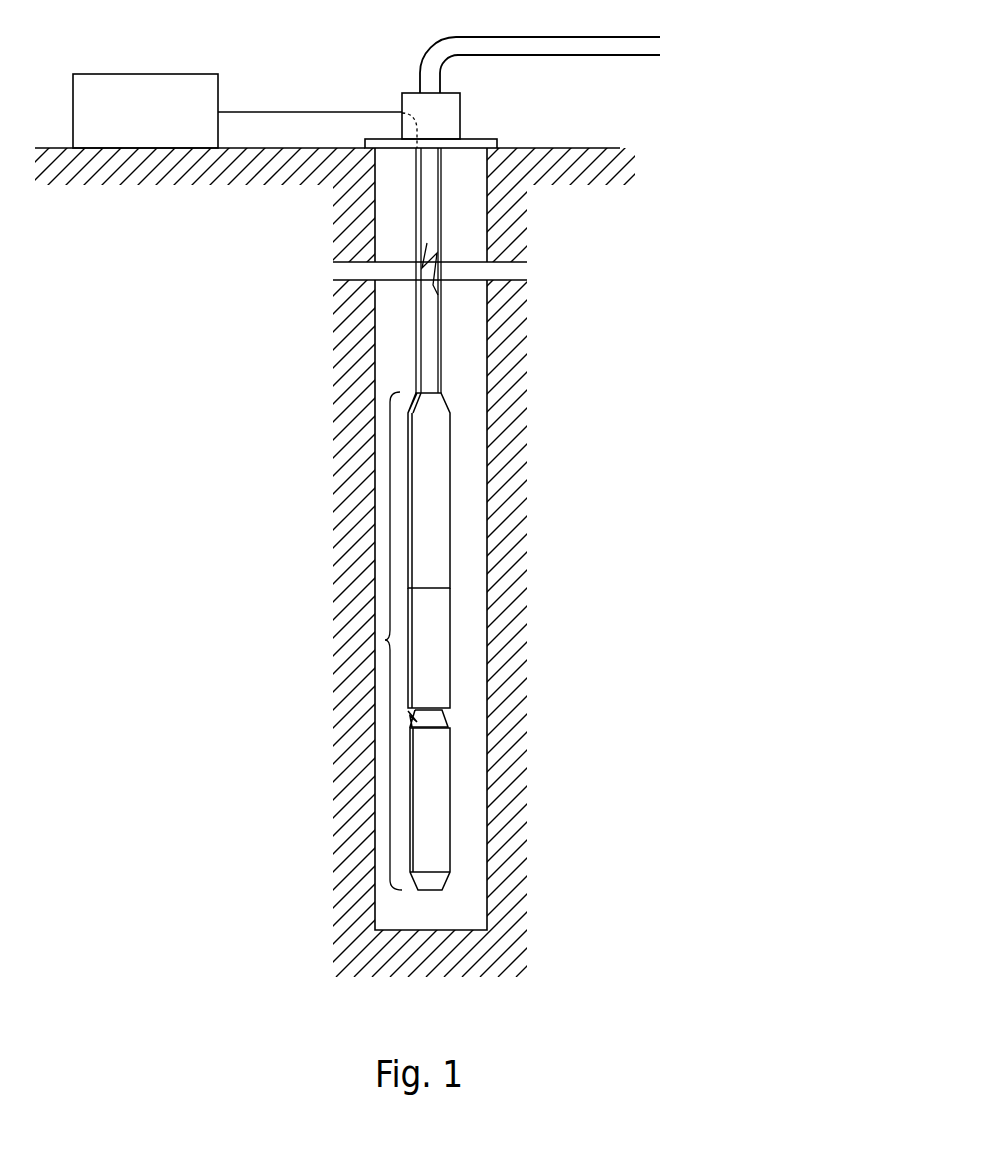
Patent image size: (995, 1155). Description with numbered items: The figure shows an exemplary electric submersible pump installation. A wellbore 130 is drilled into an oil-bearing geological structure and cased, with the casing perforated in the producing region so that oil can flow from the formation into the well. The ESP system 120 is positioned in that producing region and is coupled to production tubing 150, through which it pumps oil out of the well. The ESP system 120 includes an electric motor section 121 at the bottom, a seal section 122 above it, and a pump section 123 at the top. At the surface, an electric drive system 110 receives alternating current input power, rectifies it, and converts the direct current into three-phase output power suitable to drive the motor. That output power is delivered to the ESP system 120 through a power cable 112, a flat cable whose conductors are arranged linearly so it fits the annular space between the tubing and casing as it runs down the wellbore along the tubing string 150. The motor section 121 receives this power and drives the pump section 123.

The electric drive system 110 is at (147, 74).
The power cable 112 is at (305, 112).
The ESP system 120 is at (387, 640).
The electric motor section 121 is at (450, 812).
The seal section 122 is at (450, 638).
The pump section 123 is at (450, 488).
The wellbore 130 is at (486, 428).
The production tubing 150 is at (441, 343).